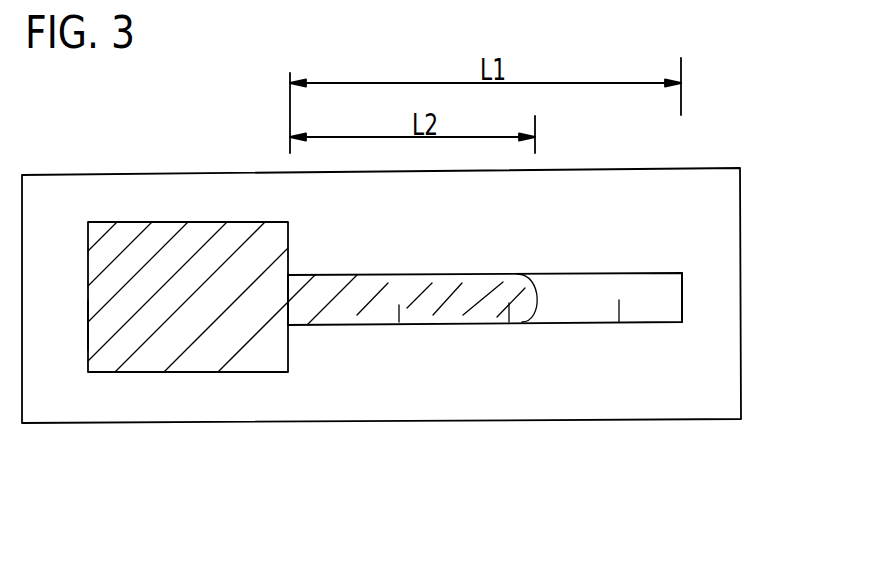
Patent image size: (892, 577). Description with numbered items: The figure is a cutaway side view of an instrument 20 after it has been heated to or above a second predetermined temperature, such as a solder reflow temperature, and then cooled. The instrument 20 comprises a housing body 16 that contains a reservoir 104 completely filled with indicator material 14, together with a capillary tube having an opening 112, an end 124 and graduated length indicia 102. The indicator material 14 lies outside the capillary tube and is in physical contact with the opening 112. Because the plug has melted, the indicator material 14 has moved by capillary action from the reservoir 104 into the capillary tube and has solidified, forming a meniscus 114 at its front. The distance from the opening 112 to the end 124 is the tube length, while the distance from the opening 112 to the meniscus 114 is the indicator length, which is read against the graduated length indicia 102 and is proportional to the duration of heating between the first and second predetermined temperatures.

The indicator material 14 is at (150, 332).
The housing body 16 is at (692, 193).
The instrument 20 is at (427, 526).
The graduated length indicia 102 is at (400, 320).
The reservoir 104 is at (88, 325).
The opening 112 is at (287, 312).
The meniscus 114 is at (537, 305).
The end 124 is at (682, 303).